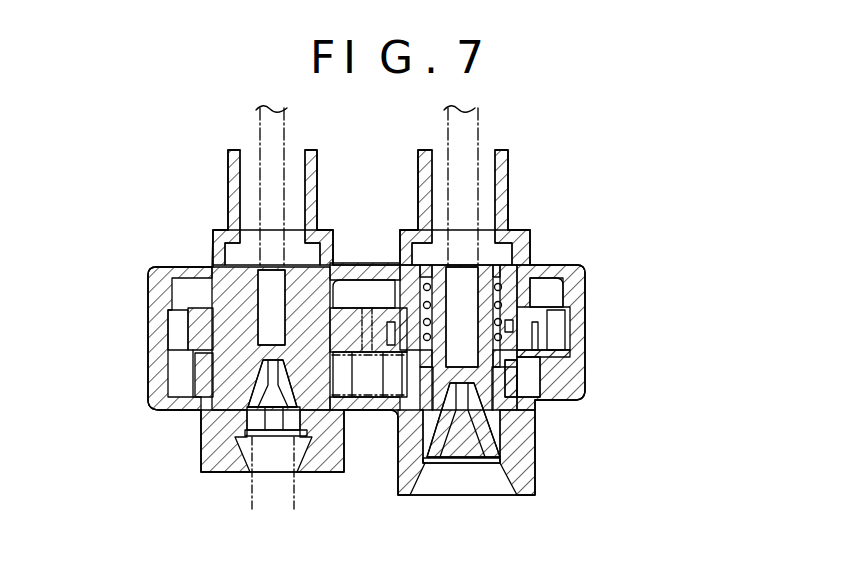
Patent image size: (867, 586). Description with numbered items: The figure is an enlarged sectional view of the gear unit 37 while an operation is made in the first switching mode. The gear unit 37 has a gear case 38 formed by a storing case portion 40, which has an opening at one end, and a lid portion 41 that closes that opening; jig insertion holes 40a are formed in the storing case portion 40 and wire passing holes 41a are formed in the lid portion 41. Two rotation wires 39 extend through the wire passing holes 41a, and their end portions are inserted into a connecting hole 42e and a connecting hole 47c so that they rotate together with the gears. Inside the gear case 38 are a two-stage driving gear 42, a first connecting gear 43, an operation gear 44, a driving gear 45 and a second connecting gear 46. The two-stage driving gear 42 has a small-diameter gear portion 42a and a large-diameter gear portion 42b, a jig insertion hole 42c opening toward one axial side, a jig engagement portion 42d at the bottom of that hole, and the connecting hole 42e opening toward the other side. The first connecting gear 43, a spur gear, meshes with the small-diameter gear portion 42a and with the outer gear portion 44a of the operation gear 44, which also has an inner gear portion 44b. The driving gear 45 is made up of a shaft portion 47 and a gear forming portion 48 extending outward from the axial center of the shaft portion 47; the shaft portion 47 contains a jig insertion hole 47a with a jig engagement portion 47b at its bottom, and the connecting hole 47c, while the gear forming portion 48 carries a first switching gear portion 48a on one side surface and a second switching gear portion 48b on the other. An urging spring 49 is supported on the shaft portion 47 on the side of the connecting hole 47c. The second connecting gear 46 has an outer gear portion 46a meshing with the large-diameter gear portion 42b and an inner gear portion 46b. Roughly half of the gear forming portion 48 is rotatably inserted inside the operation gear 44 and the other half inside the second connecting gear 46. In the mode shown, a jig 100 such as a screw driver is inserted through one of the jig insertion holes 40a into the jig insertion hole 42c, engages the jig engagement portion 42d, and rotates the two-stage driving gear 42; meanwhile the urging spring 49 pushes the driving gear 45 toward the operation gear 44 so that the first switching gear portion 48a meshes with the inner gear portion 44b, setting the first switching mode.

The gear unit 37 is at (108, 160).
The gear case 38 is at (700, 258).
The rotation wire 39 is at (258, 115).
The storing case portion 40 is at (540, 437).
The jig insertion hole 40a is at (220, 460).
The lid portion 41 is at (543, 233).
The wire passing hole 41a is at (246, 158).
The two-stage driving gear 42 is at (197, 325).
The small-diameter gear portion 42a is at (200, 374).
The large-diameter gear portion 42b is at (175, 337).
The jig insertion hole 42c is at (262, 420).
The jig engagement portion 42d is at (275, 425).
The connecting hole 42e is at (270, 290).
The first connecting gear 43 is at (315, 453).
The operation gear 44 is at (568, 398).
The outer gear portion 44a is at (537, 380).
The inner gear portion 44b is at (520, 432).
The driving gear 45 is at (500, 343).
The second connecting gear 46 is at (510, 285).
The outer gear portion 46a is at (552, 312).
The inner gear portion 46b is at (513, 303).
The shaft portion 47 is at (375, 458).
The jig insertion hole 47a is at (455, 445).
The jig engagement portion 47b is at (487, 443).
The connecting hole 47c is at (472, 300).
The gear forming portion 48 is at (520, 347).
The first switching gear portion 48a is at (533, 368).
The second switching gear portion 48b is at (405, 330).
The urging spring 49 is at (410, 300).
The jig 100 is at (247, 493).